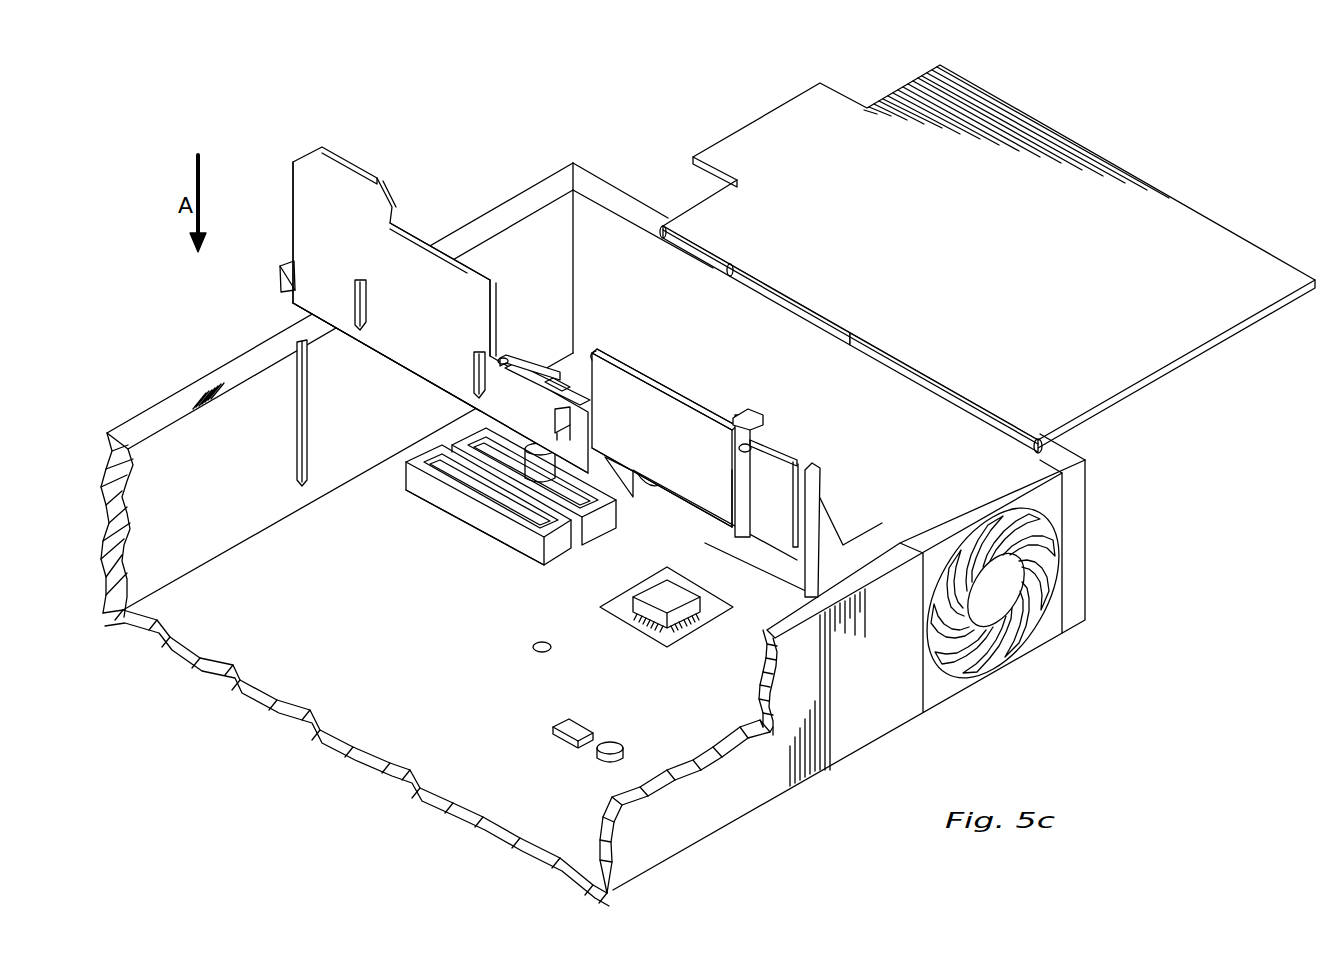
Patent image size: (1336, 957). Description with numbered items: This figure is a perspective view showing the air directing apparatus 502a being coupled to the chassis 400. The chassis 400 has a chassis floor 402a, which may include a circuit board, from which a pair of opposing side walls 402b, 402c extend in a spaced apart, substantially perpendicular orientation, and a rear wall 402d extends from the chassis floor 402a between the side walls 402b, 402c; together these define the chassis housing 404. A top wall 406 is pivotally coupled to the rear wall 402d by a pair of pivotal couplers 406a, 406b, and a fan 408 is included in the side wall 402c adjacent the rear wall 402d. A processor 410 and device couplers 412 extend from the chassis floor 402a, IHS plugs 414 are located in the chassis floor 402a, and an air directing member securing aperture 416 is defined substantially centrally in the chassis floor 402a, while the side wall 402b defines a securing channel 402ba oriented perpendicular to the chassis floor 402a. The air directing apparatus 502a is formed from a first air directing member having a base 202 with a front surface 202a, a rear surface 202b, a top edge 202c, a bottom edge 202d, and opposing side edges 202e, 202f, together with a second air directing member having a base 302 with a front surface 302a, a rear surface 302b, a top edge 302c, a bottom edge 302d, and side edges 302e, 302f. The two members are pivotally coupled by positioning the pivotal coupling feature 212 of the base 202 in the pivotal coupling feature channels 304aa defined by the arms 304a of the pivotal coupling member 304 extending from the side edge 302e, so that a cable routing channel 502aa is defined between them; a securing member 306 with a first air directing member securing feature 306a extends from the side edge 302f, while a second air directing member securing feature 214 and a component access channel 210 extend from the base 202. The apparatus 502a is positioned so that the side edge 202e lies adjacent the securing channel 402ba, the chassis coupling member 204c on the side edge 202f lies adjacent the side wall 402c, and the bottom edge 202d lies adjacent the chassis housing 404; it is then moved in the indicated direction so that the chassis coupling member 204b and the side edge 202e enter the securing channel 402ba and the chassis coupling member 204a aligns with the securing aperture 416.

The chassis 400 is at (1140, 530).
The chassis floor 402a is at (383, 630).
The side wall 402b is at (140, 428).
The side wall 402c is at (695, 835).
The rear wall 402d is at (845, 350).
The securing channel 402ba is at (297, 432).
The chassis housing 404 is at (553, 228).
The top wall 406 is at (1236, 236).
The pivotal coupler 406a is at (700, 258).
The pivotal coupler 406b is at (1000, 435).
The fan 408 is at (1000, 640).
The processor 410 is at (633, 607).
The device coupler 412 is at (405, 468).
The IHS plug 414 is at (565, 722).
The air directing member securing aperture 416 is at (540, 645).
The base 202 is at (305, 156).
The front surface 202a is at (390, 348).
The rear surface 202b is at (481, 282).
The top edge 202c is at (412, 242).
The bottom edge 202d is at (403, 373).
The side edge 202e is at (291, 225).
The side edge 202f is at (800, 465).
The chassis coupling member 204a is at (530, 460).
The chassis coupling member 204b is at (284, 285).
The chassis coupling member 204c is at (820, 470).
The component access channel 210 is at (615, 475).
The pivotal coupling feature 212 is at (483, 360).
The second air directing member securing feature 214 is at (770, 442).
The base 302 is at (672, 384).
The front surface 302a is at (715, 505).
The rear surface 302b is at (703, 415).
The top edge 302c is at (641, 380).
The bottom edge 302d is at (655, 485).
The side edge 302e is at (592, 353).
The side edge 302f is at (742, 470).
The pivotal coupling member 304 is at (580, 410).
The arm 304a is at (535, 362).
The pivotal coupling feature channel 304aa is at (518, 355).
The securing member 306 is at (775, 410).
The first air directing member securing feature 306a is at (740, 448).
The air directing apparatus 502a is at (413, 128).
The cable routing channel 502aa is at (568, 430).